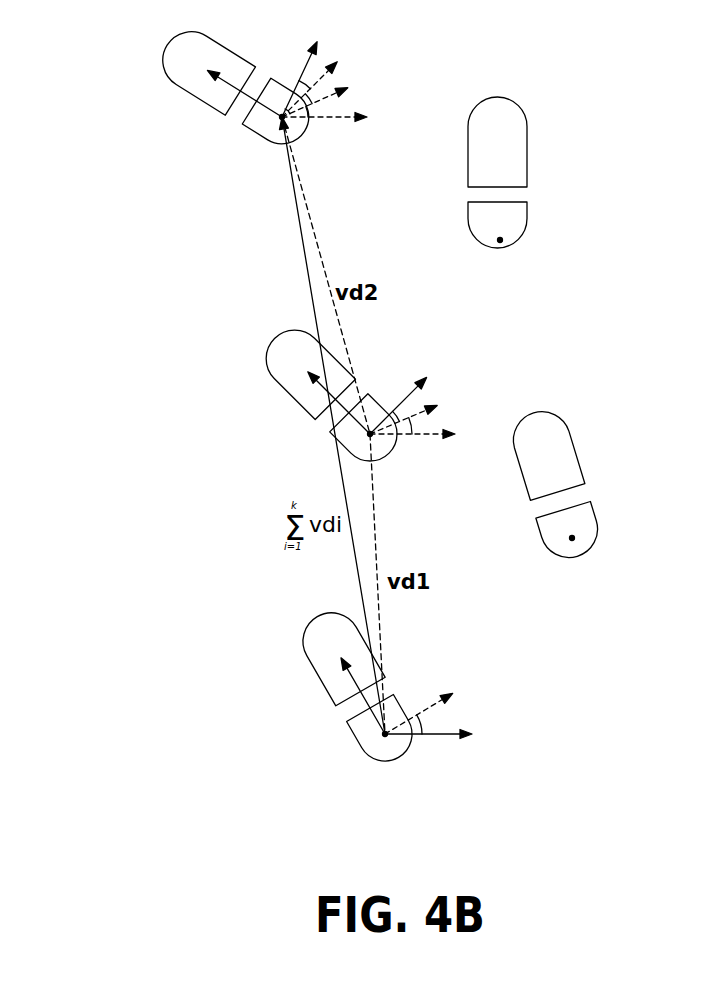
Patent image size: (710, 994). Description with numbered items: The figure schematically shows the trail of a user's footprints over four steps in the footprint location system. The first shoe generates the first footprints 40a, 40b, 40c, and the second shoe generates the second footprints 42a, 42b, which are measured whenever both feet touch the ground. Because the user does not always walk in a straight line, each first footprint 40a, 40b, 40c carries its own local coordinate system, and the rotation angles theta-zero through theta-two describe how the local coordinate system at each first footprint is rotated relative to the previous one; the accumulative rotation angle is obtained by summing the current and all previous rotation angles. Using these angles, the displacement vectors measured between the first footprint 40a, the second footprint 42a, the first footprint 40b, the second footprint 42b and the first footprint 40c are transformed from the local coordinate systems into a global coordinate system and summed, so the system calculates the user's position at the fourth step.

The first footprint 40a is at (308, 657).
The first footprint 40b is at (265, 360).
The first footprint 40c is at (163, 58).
The second footprint 42a is at (580, 457).
The second footprint 42b is at (527, 155).